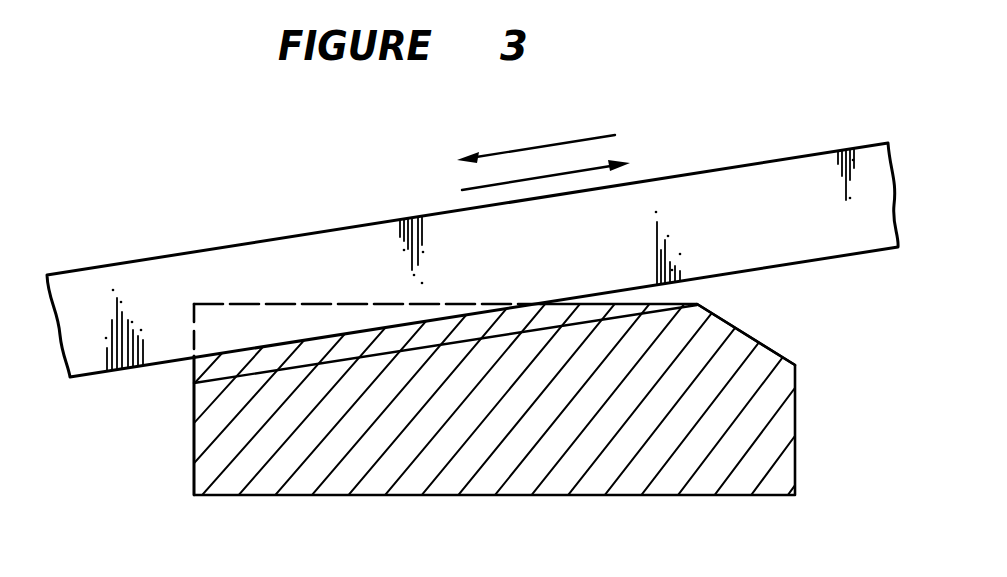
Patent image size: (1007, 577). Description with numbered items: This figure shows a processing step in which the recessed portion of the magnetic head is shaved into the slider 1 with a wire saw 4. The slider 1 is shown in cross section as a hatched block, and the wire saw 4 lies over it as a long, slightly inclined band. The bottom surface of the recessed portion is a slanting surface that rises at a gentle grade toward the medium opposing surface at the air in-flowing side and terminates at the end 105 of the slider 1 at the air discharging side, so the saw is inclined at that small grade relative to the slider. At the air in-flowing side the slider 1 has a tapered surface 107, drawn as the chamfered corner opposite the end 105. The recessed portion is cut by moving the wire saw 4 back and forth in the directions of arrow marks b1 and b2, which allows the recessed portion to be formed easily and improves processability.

The slider 1 is at (518, 447).
The wire saw 4 is at (780, 204).
The end of the slider 105 is at (193, 403).
The tapered surface 107 is at (748, 333).
The arrow mark b1 is at (562, 171).
The arrow mark b2 is at (547, 142).